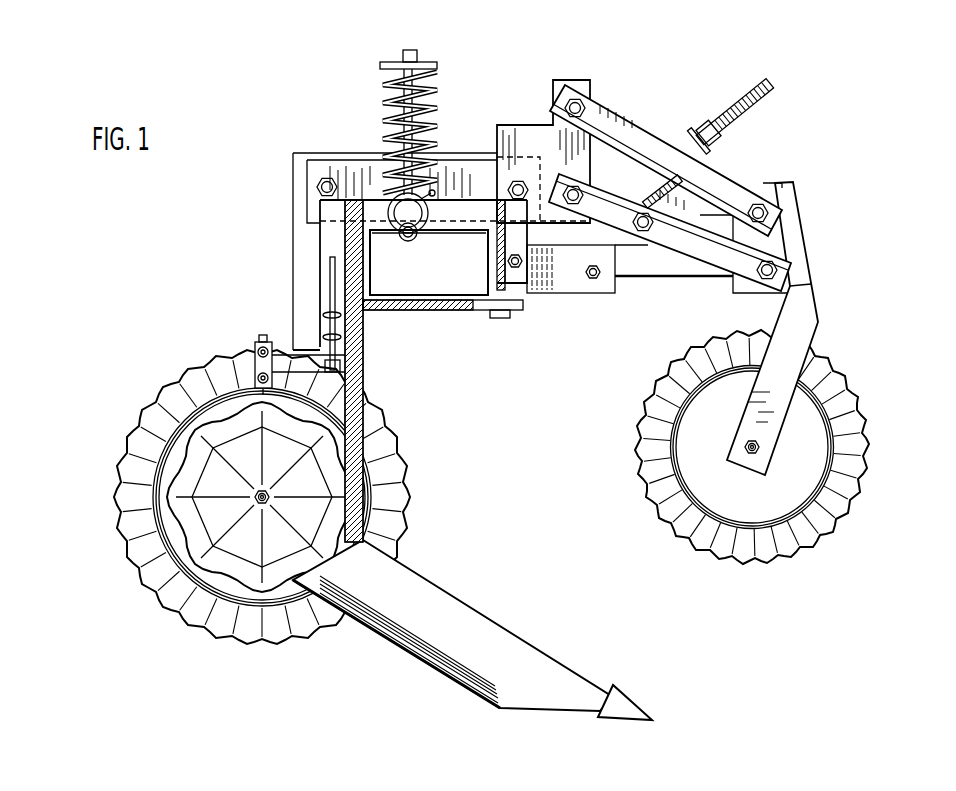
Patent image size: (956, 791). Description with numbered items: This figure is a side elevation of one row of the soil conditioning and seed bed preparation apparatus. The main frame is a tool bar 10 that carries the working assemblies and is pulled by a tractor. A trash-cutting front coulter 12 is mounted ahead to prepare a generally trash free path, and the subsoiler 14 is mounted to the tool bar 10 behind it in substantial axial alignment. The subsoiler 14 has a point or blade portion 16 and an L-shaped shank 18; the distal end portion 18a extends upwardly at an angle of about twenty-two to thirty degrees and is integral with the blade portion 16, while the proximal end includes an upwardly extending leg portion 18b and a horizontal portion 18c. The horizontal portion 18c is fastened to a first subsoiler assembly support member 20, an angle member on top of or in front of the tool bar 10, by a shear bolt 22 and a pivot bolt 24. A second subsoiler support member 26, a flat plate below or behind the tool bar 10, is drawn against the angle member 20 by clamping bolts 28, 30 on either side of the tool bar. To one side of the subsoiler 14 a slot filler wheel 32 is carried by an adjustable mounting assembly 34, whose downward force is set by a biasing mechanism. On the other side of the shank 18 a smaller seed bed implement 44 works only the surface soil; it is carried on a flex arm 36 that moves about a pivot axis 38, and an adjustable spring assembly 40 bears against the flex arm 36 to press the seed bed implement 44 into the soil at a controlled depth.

The tool bar 10 is at (470, 298).
The front coulter 12 is at (680, 523).
The subsoiler 14 is at (472, 630).
The point or blade portion 16 is at (623, 702).
The shank 18 is at (472, 418).
The distal end portion of shank 18a is at (417, 656).
The upwardly extending leg portion 18b is at (348, 394).
The horizontal portion 18c is at (343, 153).
The first subsoiler assembly support member 20 is at (572, 170).
The shear bolt 22 is at (317, 187).
The pivot bolt 24 is at (509, 183).
The second subsoiler support member 26 is at (481, 310).
The clamping bolt 28 is at (537, 303).
The clamping bolt 30 is at (345, 246).
The slot filler wheel 32 is at (132, 508).
The adjustable mounting assembly 34 is at (258, 333).
The flex arm 36 is at (322, 262).
The pivot axis 38 is at (524, 266).
The adjustable spring assembly 40 is at (356, 108).
The seed bed implement 44 is at (197, 537).